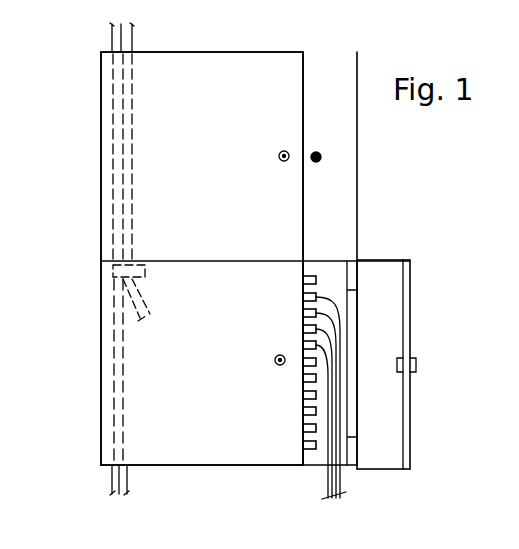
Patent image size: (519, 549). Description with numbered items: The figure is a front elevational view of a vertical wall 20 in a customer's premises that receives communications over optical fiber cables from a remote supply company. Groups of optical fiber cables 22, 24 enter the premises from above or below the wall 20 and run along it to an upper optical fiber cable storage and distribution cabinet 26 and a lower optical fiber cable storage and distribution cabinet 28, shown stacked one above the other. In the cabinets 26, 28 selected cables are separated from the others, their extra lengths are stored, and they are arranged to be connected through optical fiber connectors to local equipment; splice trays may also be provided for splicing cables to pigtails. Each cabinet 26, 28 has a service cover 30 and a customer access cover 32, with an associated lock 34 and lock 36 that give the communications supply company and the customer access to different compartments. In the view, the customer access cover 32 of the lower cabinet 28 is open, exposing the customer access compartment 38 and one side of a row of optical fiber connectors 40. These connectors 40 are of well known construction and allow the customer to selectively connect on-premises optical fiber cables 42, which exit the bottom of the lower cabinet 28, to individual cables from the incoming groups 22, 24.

The vertical wall 20 is at (425, 190).
The optical fiber cables 22 is at (133, 37).
The optical fiber cables 24 is at (111, 37).
The optical fiber cable storage and distribution cabinet 26 is at (258, 50).
The optical fiber cable storage and distribution cabinet 28 is at (268, 470).
The service cover 30 is at (224, 68).
The customer access cover 32 is at (349, 57).
The lock 34 is at (278, 157).
The lock 36 is at (334, 137).
The customer access compartment 38 is at (333, 272).
The optical fiber connectors 40 is at (304, 312).
The on-premises optical fiber cables 42 is at (344, 493).